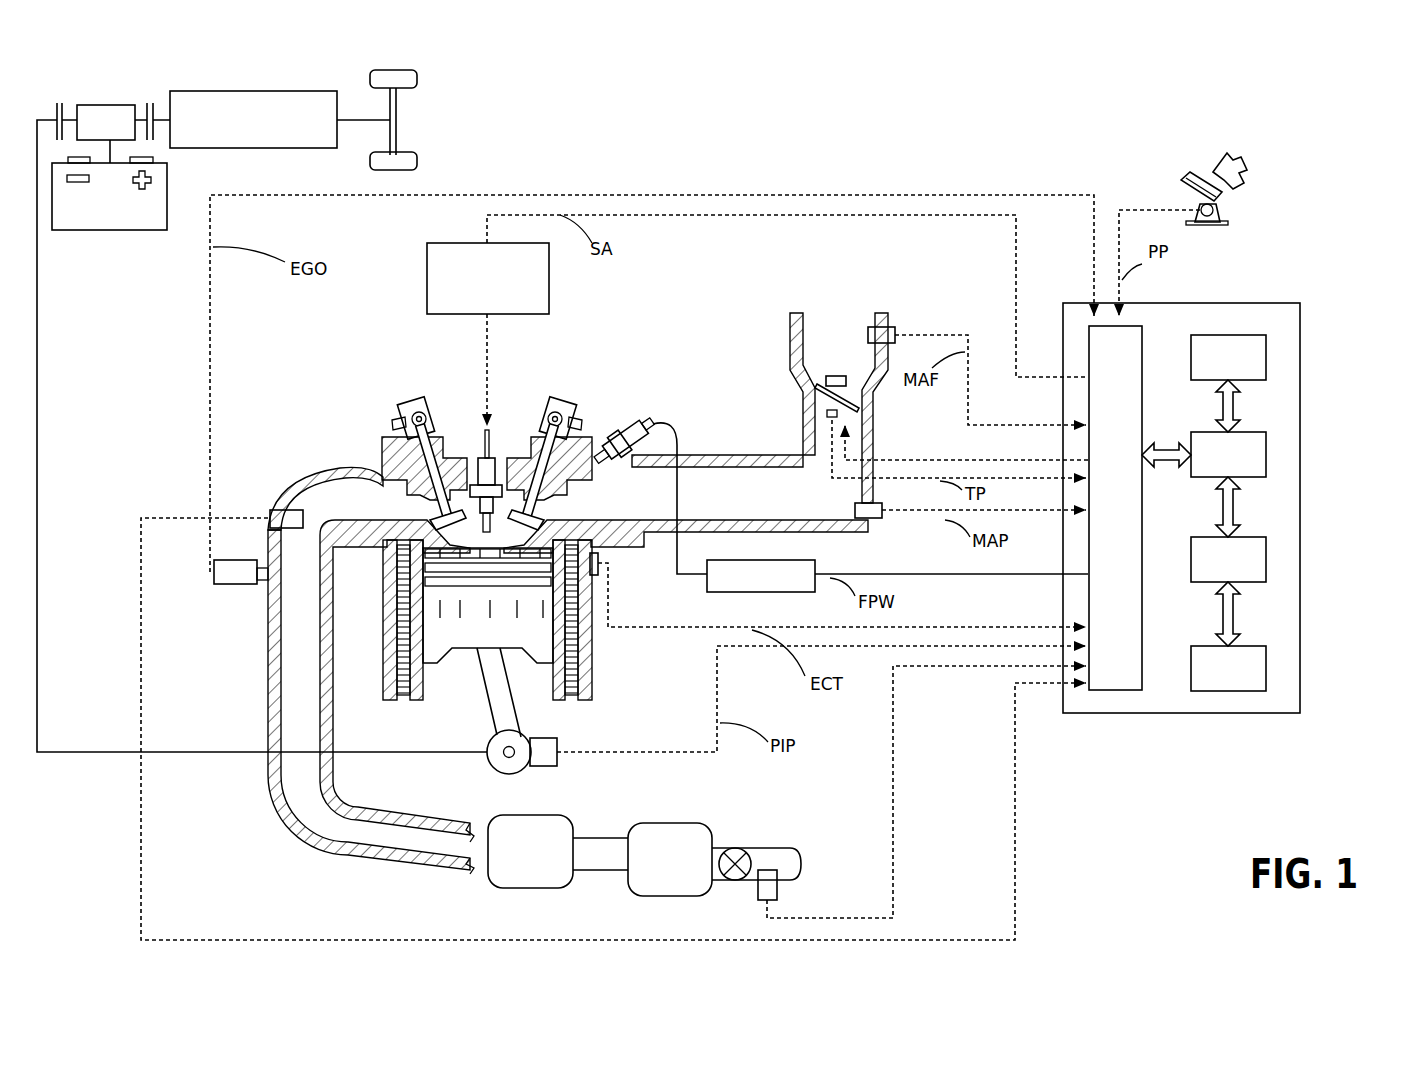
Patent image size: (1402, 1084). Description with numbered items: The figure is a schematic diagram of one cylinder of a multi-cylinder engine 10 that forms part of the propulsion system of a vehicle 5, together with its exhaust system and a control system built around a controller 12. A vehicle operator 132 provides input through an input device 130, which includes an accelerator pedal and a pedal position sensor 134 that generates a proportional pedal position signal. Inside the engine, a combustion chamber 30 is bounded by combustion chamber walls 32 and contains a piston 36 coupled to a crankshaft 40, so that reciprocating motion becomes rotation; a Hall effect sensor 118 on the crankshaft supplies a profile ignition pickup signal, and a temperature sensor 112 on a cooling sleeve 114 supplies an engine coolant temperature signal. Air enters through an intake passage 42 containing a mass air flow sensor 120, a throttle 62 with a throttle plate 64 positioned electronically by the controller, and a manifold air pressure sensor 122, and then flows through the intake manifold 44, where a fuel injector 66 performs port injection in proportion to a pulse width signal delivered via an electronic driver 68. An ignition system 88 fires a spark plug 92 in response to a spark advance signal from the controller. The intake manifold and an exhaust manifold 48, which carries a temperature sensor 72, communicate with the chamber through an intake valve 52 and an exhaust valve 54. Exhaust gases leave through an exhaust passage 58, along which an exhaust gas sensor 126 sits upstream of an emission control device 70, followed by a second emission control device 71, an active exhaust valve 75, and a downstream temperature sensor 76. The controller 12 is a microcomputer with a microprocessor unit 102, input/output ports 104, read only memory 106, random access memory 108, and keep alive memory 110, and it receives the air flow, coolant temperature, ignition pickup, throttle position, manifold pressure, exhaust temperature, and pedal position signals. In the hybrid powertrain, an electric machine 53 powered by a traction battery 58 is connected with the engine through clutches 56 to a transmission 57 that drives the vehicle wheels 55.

The vehicle 5 is at (1313, 103).
The engine 10 is at (313, 390).
The controller 12 is at (1230, 497).
The combustion chamber 30 is at (485, 542).
The combustion chamber walls 32 is at (425, 685).
The piston 36 is at (489, 637).
The crankshaft 40 is at (497, 768).
The intake passage 42 is at (845, 363).
The intake manifold 44 is at (780, 505).
The exhaust manifold 48 is at (358, 510).
The intake valve 52 is at (532, 513).
The electric machine 53 is at (113, 105).
The exhaust valve 54 is at (440, 514).
The vehicle wheels 55 is at (412, 88).
The clutch 56 is at (57, 113).
The transmission 57 is at (315, 148).
The traction battery 58 is at (108, 230).
The throttle 62 is at (860, 398).
The throttle plate 64 is at (820, 396).
The fuel injector 66 is at (640, 432).
The electronic driver 68 is at (712, 592).
The emission control device 70 is at (520, 888).
The second emission control device 71 is at (688, 823).
The temperature sensor 72 is at (270, 512).
The active exhaust valve 75 is at (748, 852).
The temperature sensor 76 is at (780, 887).
The ignition system 88 is at (438, 243).
The spark plug 92 is at (492, 468).
The microprocessor unit 102 is at (1266, 450).
The input/output ports 104 is at (1145, 335).
The read only memory 106 is at (1266, 357).
The random access memory 108 is at (1266, 560).
The keep alive memory 110 is at (1266, 670).
The temperature sensor 112 is at (600, 563).
The cooling sleeve 114 is at (588, 645).
The Hall effect sensor 118 is at (555, 768).
The mass air flow sensor 120 is at (893, 330).
The manifold air pressure sensor 122 is at (880, 518).
The exhaust gas sensor 126 is at (212, 560).
The input device 130 is at (1257, 199).
The vehicle operator 132 is at (1247, 170).
The pedal position sensor 134 is at (1226, 210).